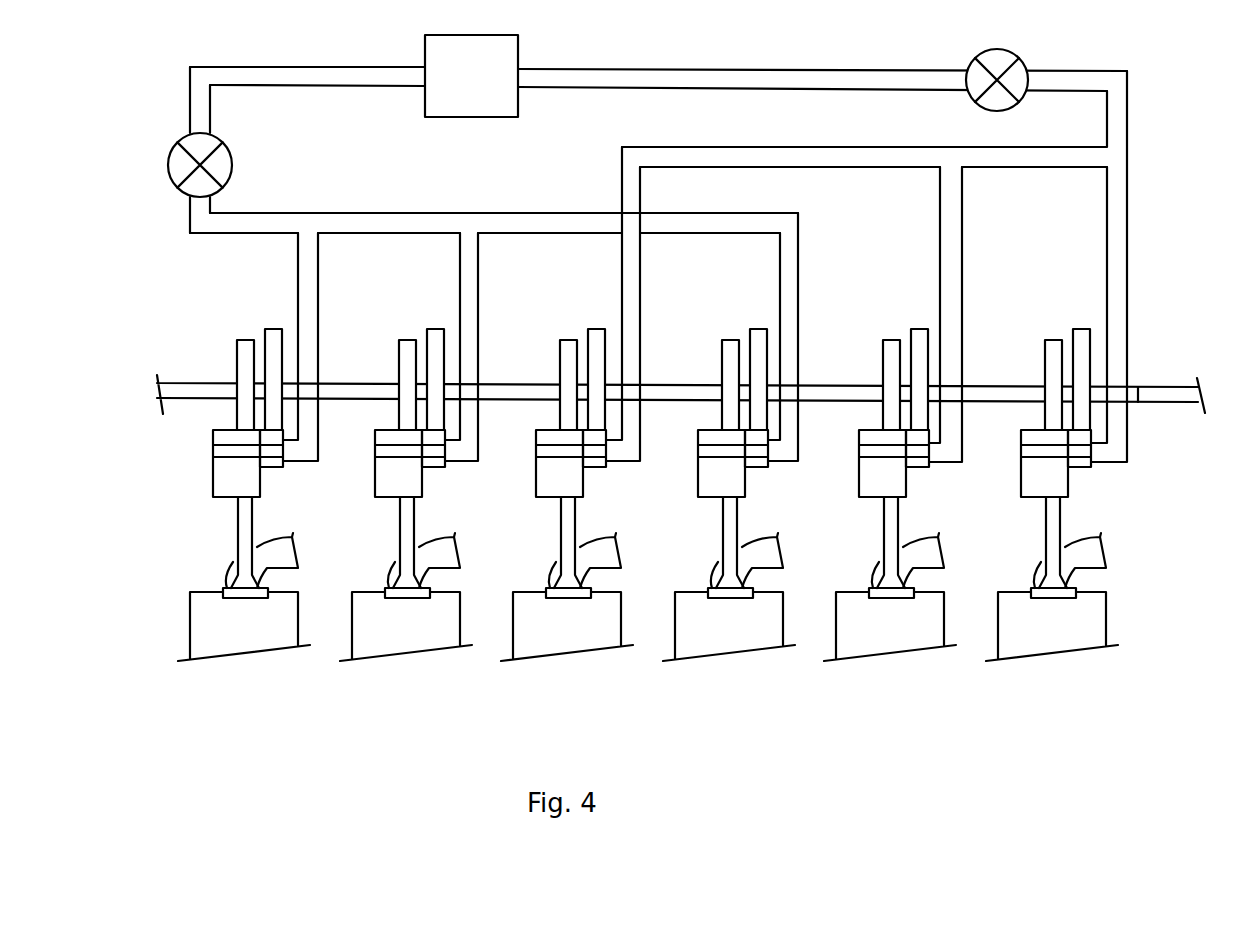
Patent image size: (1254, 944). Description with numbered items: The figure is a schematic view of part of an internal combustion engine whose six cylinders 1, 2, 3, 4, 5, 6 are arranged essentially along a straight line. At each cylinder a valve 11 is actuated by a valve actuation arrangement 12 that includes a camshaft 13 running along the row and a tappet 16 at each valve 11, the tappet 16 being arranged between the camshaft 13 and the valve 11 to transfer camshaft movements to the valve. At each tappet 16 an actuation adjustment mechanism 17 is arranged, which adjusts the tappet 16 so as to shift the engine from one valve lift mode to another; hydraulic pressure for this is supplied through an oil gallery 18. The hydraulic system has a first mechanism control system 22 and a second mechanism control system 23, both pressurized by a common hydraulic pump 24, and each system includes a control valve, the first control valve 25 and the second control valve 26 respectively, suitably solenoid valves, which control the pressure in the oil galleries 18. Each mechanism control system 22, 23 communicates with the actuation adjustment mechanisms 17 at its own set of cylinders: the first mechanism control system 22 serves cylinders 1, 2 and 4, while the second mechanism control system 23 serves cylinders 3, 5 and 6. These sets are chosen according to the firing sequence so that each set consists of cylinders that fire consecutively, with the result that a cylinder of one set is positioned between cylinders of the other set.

The cylinder 1 is at (243, 645).
The cylinder 2 is at (417, 640).
The cylinder 3 is at (572, 647).
The cylinder 4 is at (728, 648).
The cylinder 5 is at (888, 645).
The cylinder 6 is at (1043, 650).
The valve 11 is at (240, 528).
The valve actuation arrangement 12 is at (1149, 424).
The camshaft 13 is at (1150, 397).
The tappet 16 is at (218, 485).
The actuation adjustment mechanism 17 is at (288, 481).
The oil gallery 18 is at (477, 266).
The first mechanism control system 22 is at (244, 253).
The second mechanism control system 23 is at (1044, 192).
The hydraulic pump 24 is at (427, 104).
The first control valve 25 is at (223, 158).
The second control valve 26 is at (975, 100).